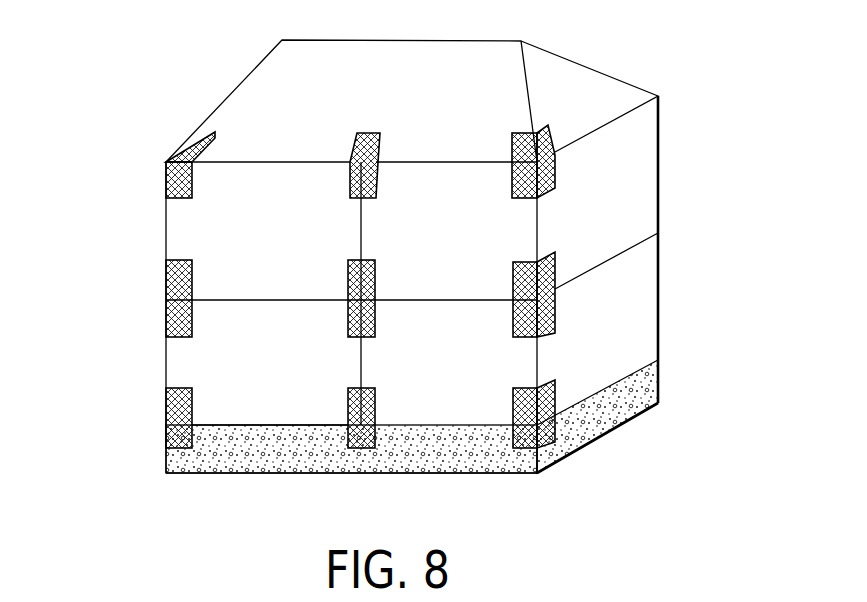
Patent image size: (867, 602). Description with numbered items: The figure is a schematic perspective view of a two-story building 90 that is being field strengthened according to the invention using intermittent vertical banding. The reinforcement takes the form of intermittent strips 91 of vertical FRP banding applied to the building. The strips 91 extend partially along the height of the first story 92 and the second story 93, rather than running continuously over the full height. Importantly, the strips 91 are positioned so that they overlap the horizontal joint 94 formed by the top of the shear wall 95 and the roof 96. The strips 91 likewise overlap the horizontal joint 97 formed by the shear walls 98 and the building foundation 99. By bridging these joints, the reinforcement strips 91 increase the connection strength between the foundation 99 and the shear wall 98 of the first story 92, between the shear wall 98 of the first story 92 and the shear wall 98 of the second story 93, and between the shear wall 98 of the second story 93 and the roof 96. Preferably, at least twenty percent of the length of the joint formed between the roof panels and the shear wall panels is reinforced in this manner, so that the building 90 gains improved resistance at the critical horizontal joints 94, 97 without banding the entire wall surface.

The 2-story building 90 is at (192, 80).
The strips 91 is at (557, 172).
The first story 92 is at (132, 303).
The second story 93 is at (132, 162).
The horizontal joint 94 is at (255, 160).
The shear wall 95 is at (480, 162).
The roof 96 is at (445, 93).
The horizontal joint 97 is at (232, 425).
The shear walls 98 is at (300, 353).
The building foundation 99 is at (660, 375).